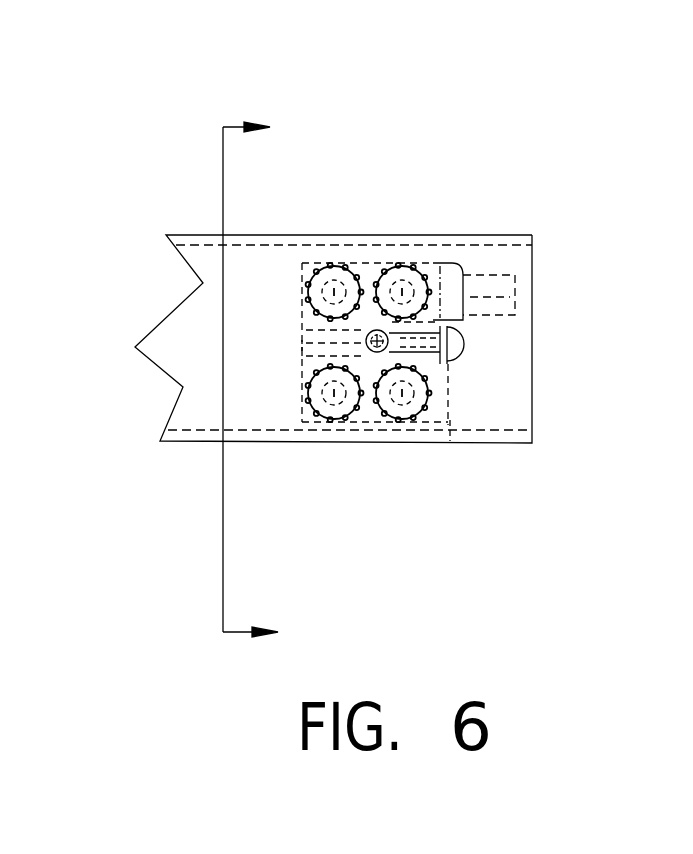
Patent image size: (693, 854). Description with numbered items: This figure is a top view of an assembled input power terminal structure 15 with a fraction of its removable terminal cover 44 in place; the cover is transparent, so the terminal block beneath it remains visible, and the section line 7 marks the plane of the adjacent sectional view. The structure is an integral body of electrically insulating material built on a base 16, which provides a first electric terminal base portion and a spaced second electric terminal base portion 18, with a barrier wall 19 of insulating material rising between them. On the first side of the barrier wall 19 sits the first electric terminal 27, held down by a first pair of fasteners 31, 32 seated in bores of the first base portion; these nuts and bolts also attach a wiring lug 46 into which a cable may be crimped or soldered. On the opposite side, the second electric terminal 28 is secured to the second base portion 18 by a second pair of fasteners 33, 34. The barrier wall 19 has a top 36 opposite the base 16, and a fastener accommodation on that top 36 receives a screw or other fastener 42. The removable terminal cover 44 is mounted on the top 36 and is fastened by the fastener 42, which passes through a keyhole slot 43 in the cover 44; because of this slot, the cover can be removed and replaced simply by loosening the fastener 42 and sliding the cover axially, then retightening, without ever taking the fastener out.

The section line 7- 7 is at (279, 381).
The integral input power terminal structure 15 is at (458, 397).
The base 16 is at (302, 355).
The second electric terminal base portion 18 is at (450, 420).
The barrier wall 19 is at (302, 357).
The first electric terminal 27 is at (365, 272).
The second electric terminal 28 is at (368, 412).
The fastener 31 is at (403, 294).
The fastener 32 is at (336, 288).
The fastener 33 is at (402, 395).
The fastener 34 is at (333, 395).
The top of the barrier wall 36 is at (305, 350).
The fastener 42 is at (413, 320).
The keyhole slot 43 is at (462, 355).
The removable terminal cover 44 is at (514, 246).
The lug 46 is at (517, 297).